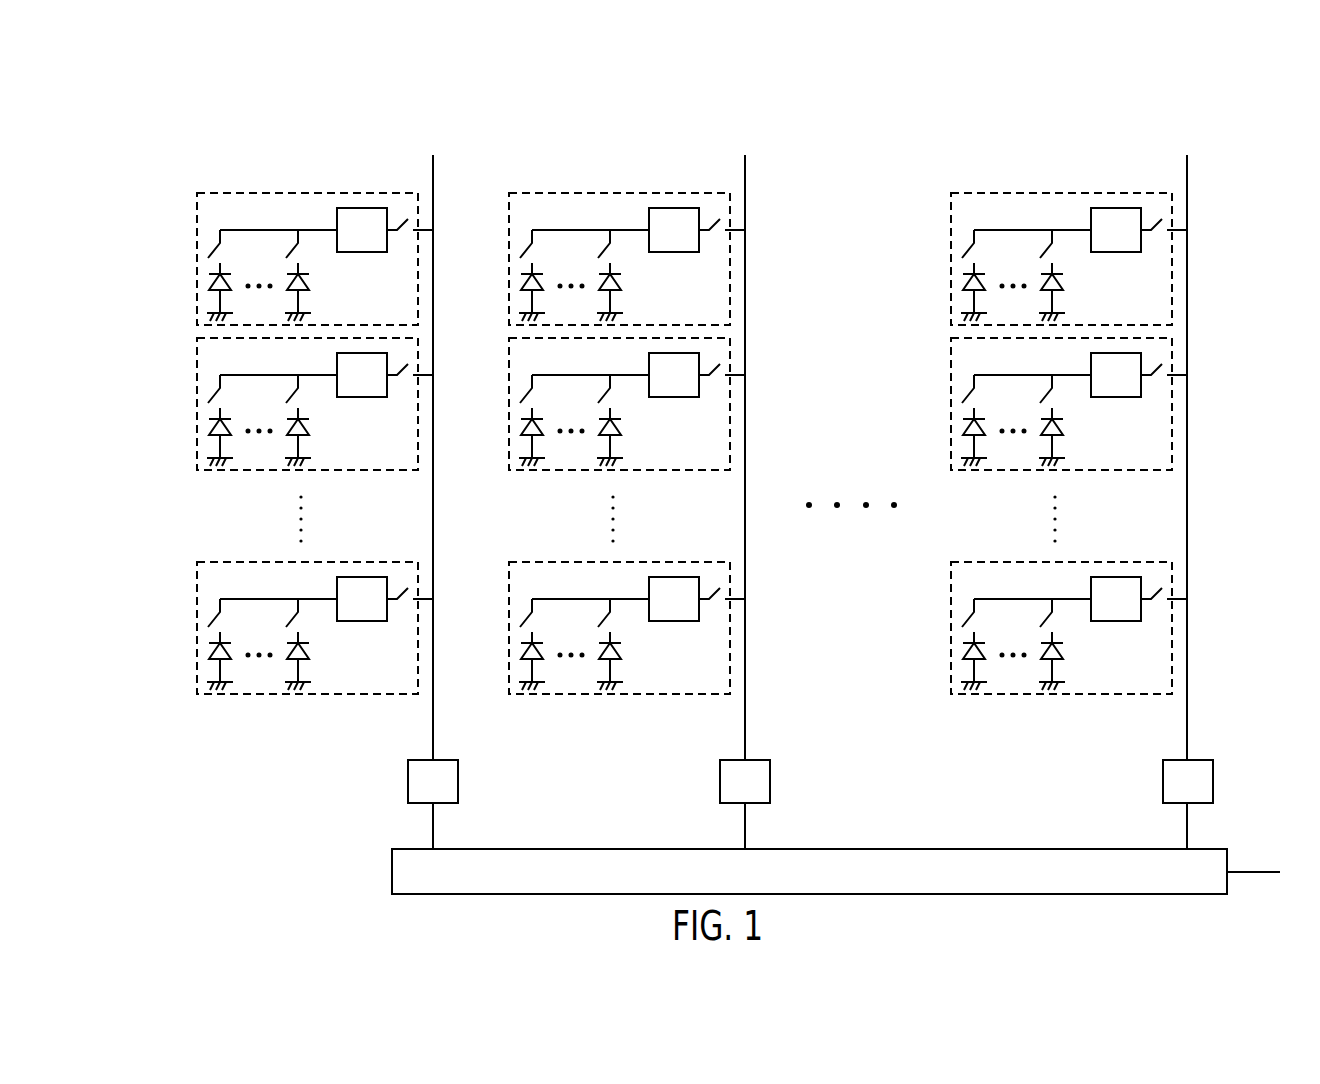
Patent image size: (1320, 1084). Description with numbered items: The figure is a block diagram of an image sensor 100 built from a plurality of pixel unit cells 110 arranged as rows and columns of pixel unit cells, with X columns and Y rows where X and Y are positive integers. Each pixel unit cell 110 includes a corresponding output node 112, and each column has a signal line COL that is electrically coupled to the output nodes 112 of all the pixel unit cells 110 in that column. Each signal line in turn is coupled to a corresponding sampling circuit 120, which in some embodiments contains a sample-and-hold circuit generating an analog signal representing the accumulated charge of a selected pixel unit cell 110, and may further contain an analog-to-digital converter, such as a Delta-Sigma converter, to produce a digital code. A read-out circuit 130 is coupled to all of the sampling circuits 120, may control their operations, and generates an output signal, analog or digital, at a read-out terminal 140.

The image sensor 100 is at (1243, 138).
The pixel unit cell 110 is at (197, 252).
The output node 112 is at (415, 230).
The sampling circuit 120 is at (408, 780).
The read-out circuit 130 is at (853, 848).
The read-out terminal 140 is at (1252, 870).